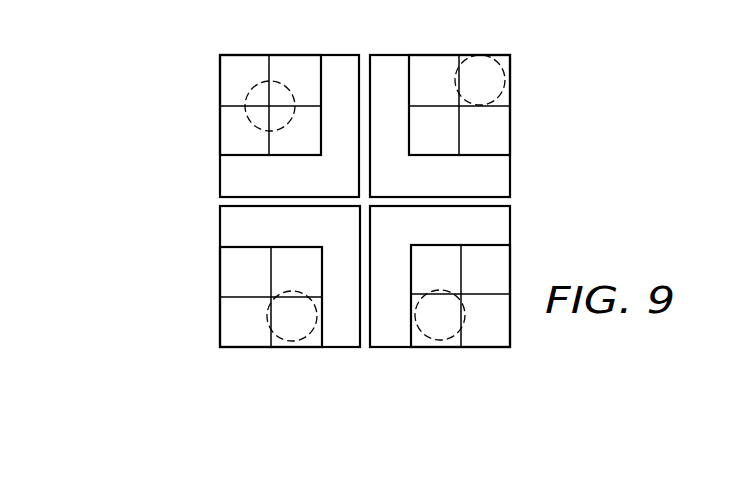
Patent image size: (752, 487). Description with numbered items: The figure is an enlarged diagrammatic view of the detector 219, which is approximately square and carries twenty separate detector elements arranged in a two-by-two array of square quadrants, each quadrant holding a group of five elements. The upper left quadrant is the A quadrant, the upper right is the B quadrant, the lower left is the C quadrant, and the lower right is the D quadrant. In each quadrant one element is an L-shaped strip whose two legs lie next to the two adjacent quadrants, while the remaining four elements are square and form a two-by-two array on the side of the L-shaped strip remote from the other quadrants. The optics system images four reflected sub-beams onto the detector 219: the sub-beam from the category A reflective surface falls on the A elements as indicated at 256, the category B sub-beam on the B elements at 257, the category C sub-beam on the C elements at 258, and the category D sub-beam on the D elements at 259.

The detector 219 is at (552, 125).
The reflected sub-beam location on A quadrant 256 is at (248, 112).
The reflected sub-beam location on B quadrant 257 is at (498, 62).
The reflected sub-beam location on C quadrant 258 is at (307, 338).
The reflected sub-beam location on D quadrant 259 is at (430, 336).